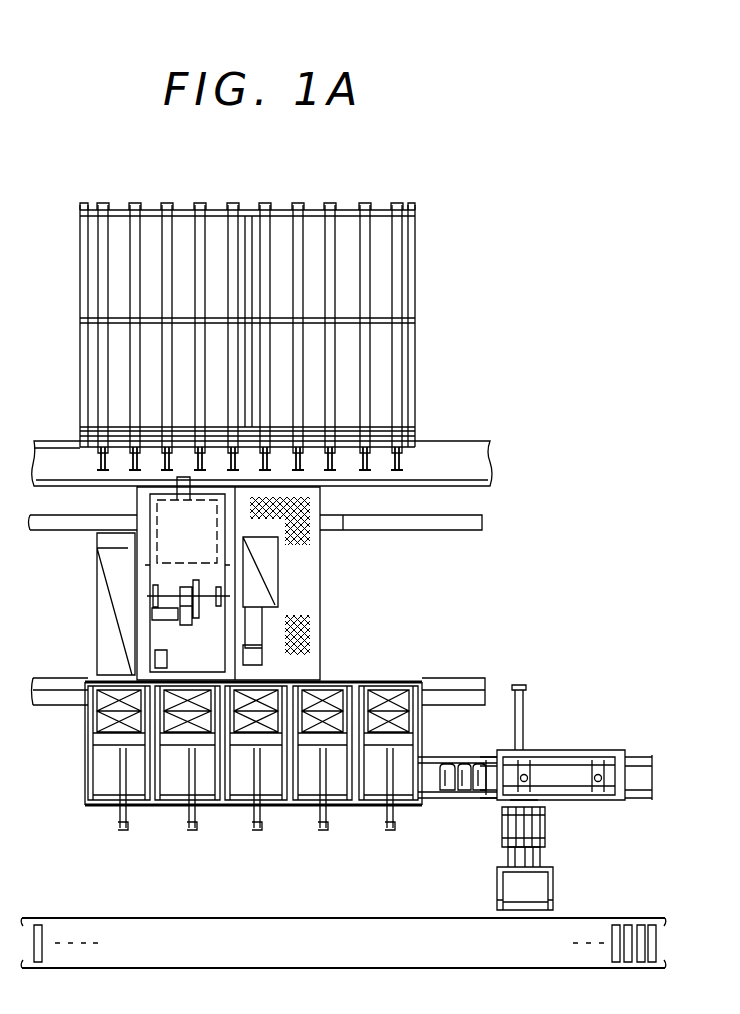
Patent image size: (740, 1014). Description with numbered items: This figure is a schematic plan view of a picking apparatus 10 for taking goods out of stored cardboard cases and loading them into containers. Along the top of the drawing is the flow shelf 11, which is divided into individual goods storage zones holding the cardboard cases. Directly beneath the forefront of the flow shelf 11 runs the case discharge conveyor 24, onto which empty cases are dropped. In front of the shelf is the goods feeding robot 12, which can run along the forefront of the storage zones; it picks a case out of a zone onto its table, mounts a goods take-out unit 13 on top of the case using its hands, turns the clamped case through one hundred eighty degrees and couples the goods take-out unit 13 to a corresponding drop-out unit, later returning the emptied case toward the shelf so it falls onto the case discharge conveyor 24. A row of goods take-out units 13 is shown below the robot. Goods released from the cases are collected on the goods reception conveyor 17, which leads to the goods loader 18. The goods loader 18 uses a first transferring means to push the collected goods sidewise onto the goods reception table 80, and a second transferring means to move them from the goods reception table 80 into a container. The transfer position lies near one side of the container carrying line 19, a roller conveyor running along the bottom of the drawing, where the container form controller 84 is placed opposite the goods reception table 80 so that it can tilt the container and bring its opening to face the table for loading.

The picking apparatus 10 is at (60, 647).
The flow shelf 11 is at (420, 352).
The goods feeding robot 12 is at (312, 594).
The goods take-out unit 13 is at (420, 678).
The goods reception conveyor 17 is at (448, 796).
The goods loader 18 is at (552, 746).
The container carrying line 19 is at (645, 913).
The case discharge conveyor 24 is at (490, 466).
The goods reception table 80 is at (547, 827).
The container form controller 84 is at (553, 878).